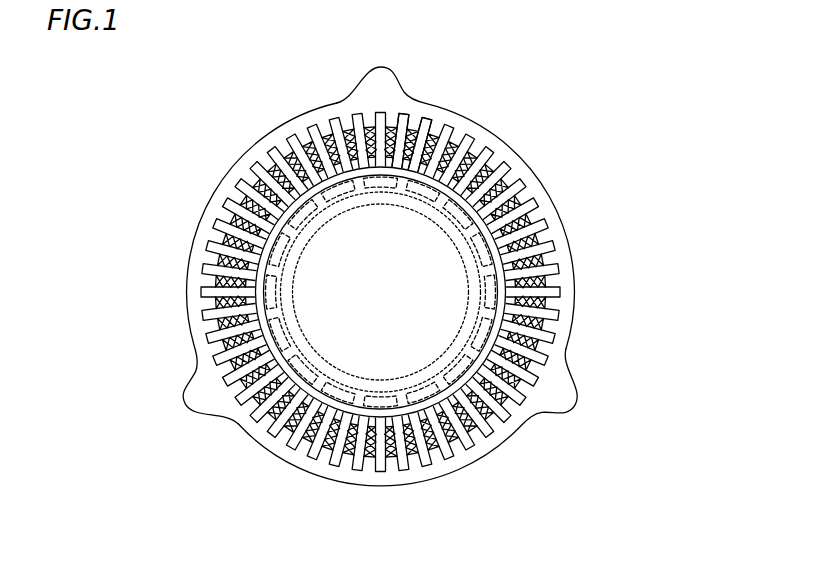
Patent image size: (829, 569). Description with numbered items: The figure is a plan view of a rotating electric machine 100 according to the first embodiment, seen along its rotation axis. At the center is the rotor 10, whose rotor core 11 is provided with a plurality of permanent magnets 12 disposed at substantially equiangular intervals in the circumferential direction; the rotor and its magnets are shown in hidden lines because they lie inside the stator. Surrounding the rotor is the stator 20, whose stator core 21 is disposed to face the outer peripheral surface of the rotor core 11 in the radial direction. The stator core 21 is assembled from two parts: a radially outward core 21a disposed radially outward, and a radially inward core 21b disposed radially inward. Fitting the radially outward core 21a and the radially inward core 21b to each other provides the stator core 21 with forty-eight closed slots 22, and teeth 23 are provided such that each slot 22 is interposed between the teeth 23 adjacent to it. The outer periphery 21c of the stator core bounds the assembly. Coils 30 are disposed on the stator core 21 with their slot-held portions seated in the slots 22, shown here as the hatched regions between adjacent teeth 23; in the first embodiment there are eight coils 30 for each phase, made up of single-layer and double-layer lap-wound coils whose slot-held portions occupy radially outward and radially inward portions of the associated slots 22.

The rotating electric machine 100 is at (408, 300).
The stator 20 is at (398, 300).
The stator core 21 is at (398, 300).
The radially outward core 21a is at (530, 166).
The radially inward core 21b is at (380, 257).
The outer peripheral surface of stator core 21c is at (398, 318).
The slot 22 is at (409, 130).
The teeth 23 is at (403, 113).
The coil 30 is at (259, 276).
The rotor 10 is at (381, 292).
The rotor core 11 is at (462, 342).
The permanent magnets 12 is at (383, 393).